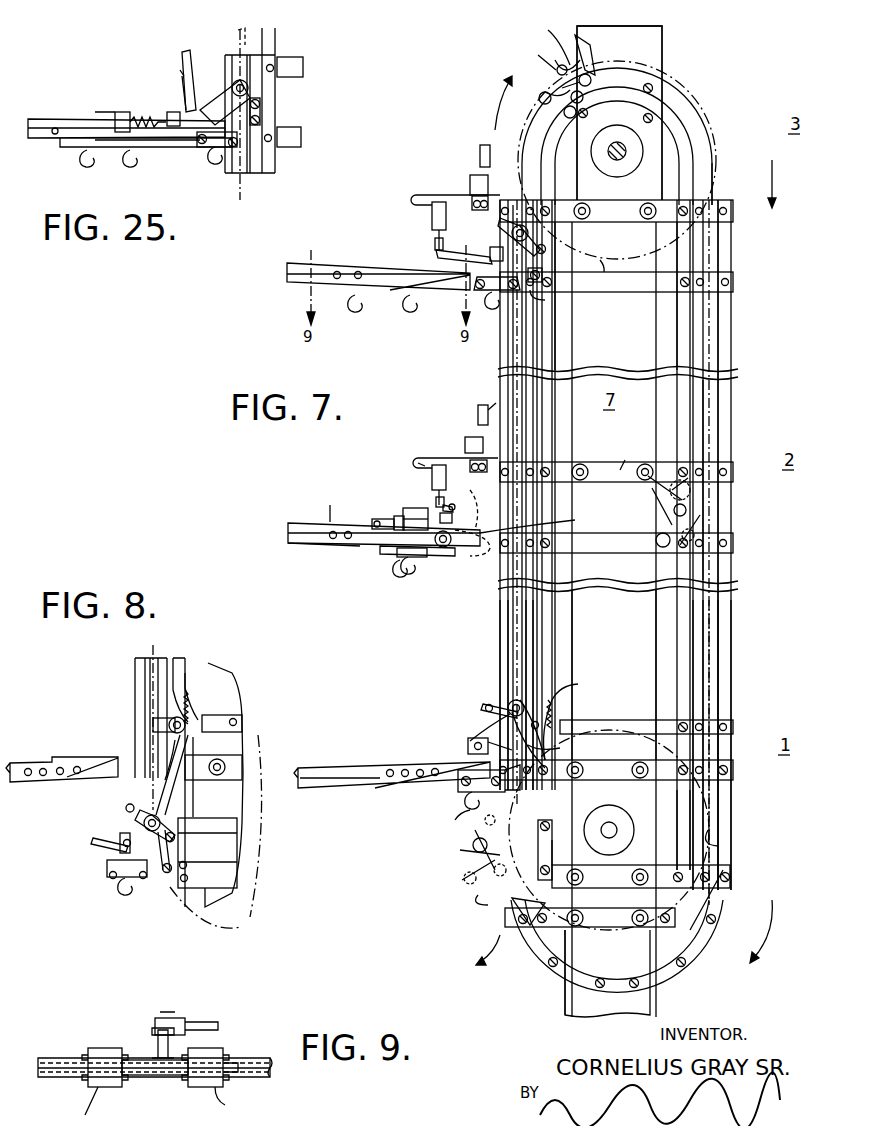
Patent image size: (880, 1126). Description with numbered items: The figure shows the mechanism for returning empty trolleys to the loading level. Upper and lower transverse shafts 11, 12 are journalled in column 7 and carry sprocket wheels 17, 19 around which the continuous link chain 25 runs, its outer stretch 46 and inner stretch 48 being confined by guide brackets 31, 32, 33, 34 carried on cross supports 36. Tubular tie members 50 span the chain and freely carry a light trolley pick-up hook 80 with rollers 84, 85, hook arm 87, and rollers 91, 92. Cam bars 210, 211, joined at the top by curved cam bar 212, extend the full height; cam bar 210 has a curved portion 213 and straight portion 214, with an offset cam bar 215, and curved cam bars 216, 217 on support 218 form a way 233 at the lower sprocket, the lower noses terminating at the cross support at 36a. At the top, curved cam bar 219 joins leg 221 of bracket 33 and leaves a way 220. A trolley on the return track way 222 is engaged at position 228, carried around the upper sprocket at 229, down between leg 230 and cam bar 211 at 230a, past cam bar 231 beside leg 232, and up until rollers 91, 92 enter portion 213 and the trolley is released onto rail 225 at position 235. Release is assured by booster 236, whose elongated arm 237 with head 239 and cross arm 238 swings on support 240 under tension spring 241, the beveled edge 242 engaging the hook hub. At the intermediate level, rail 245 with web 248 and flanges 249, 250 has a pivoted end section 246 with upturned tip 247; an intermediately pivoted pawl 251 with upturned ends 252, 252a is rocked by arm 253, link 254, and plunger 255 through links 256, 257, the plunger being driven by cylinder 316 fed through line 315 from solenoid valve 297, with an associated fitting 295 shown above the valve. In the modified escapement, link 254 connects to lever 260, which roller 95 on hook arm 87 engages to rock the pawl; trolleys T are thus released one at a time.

In FIG. 8, the column 7 is at (232, 688).
In FIG. 7, the upper transverse shaft 11 is at (620, 154).
In FIG. 7, the lower transverse shaft 12 is at (611, 828).
In FIG. 7, the upper sprocket wheel 17 is at (614, 263).
In FIG. 7, the lower sprocket wheel 19 is at (718, 846).
In FIG. 25, the continuous link chain 25 is at (242, 195).
In FIG. 7, the continuous link chain 25 is at (708, 640).
In FIG. 8, the continuous link chain 25 is at (155, 650).
In FIG. 7, the guide bracket 31 is at (528, 630).
In FIG. 7, the guide bracket 32 is at (530, 630).
In FIG. 7, the guide bracket 33 is at (695, 620).
In FIG. 7, the guide bracket 34 is at (722, 626).
In FIG. 7, the cross support 36 is at (618, 210).
In FIG. 7, the cross support location 36a is at (590, 885).
In FIG. 7, the outer chain stretch 46 is at (712, 418).
In FIG. 25, the inner chain stretch 48 is at (240, 196).
In FIG. 7, the inner chain stretch 48 is at (500, 612).
In FIG. 8, the inner chain stretch 48 is at (152, 652).
In FIG. 25, the tubular tie member 50 is at (248, 88).
In FIG. 7, the tubular tie member 50 is at (530, 234).
In FIG. 8, the tubular tie member 50 is at (160, 820).
In FIG. 25, the light trolley pick-up hook 80 is at (260, 116).
In FIG. 7, the light trolley pick-up hook 80 is at (545, 270).
In FIG. 8, the light trolley pick-up hook 80 is at (96, 846).
In FIG. 7, the roller 84 is at (554, 247).
In FIG. 7, the roller 85 is at (490, 192).
In FIG. 25, the hook arm 87 is at (215, 128).
In FIG. 7, the hook arm 87 is at (486, 292).
In FIG. 7, the roller 91 is at (545, 300).
In FIG. 7, the roller 92 is at (545, 283).
In FIG. 25, the roller 95 is at (198, 100).
In FIG. 7, the cam bar 210 is at (550, 350).
In FIG. 8, the cam bar 210 is at (190, 660).
In FIG. 7, the cam bar 211 is at (680, 340).
In FIG. 7, the curved cam bar 212 is at (608, 110).
In FIG. 7, the curved portion 213 is at (555, 700).
In FIG. 7, the straight portion 214 is at (548, 820).
In FIG. 7, the cam bar 215 is at (552, 852).
In FIG. 7, the inner curved cam bar 216 is at (604, 962).
In FIG. 7, the outer curved cam bar 217 is at (598, 992).
In FIG. 7, the support 218 is at (518, 924).
In FIG. 7, the curved cam bar 219 is at (640, 82).
In FIG. 7, the curved way 220 is at (670, 112).
In FIG. 7, the leg 221 is at (714, 175).
In FIG. 7, the return track way 222 is at (295, 262).
In FIG. 9, the return track way 222 is at (66, 1056).
In FIG. 7, the rail 225 is at (322, 756).
In FIG. 8, the rail 225 is at (36, 750).
In FIG. 7, the trolley position 228 is at (480, 250).
In FIG. 7, the trolley position 229 is at (553, 45).
In FIG. 7, the vertical leg 230 is at (712, 252).
In FIG. 7, the broken-line position 230a is at (692, 500).
In FIG. 7, the cam bar 231 is at (700, 800).
In FIG. 7, the vertical leg 232 is at (716, 705).
In FIG. 7, the way 233 is at (672, 942).
In FIG. 7, the release position 235 is at (470, 740).
In FIG. 7, the booster 236 is at (488, 726).
In FIG. 8, the booster 236 is at (172, 718).
In FIG. 8, the elongated arm 237 is at (170, 745).
In FIG. 8, the cross arm 238 is at (235, 738).
In FIG. 7, the head 239 is at (490, 735).
In FIG. 8, the head 239 is at (165, 782).
In FIG. 7, the support 240 is at (588, 724).
In FIG. 8, the support 240 is at (226, 712).
In FIG. 7, the tension spring 241 is at (556, 708).
In FIG. 8, the tension spring 241 is at (192, 700).
In FIG. 8, the beveled edge 242 is at (153, 724).
In FIG. 7, the rail 245 is at (300, 522).
In FIG. 9, the rail 245 is at (144, 1059).
In FIG. 7, the pivoted end rail section 246 is at (470, 556).
In FIG. 7, the upturned tip 247 is at (606, 497).
In FIG. 7, the web 248 is at (375, 549).
In FIG. 7, the upper flange 249 is at (315, 502).
In FIG. 7, the lower flange 250 is at (300, 544).
In FIG. 7, the pawl 251 is at (395, 558).
In FIG. 9, the pawl 251 is at (180, 1068).
In FIG. 7, the upturned end 252 is at (374, 519).
In FIG. 9, the upturned end 252 is at (124, 1062).
In FIG. 7, the upturned end 252a is at (445, 550).
In FIG. 9, the upturned end 252a is at (222, 1066).
In FIG. 7, the arm 253 is at (396, 516).
In FIG. 9, the arm 253 is at (152, 1026).
In FIG. 7, the link 254 is at (410, 508).
In FIG. 9, the link 254 is at (212, 1018).
In FIG. 7, the plunger 255 is at (432, 488).
In FIG. 7, the link 256 is at (462, 495).
In FIG. 7, the link 257 is at (455, 520).
In FIG. 25, the lever 260 is at (181, 76).
In FIG. 7, the valve 295 is at (478, 410).
In FIG. 7, the solenoid valve 297 is at (466, 447).
In FIG. 7, the air line 315 is at (425, 457).
In FIG. 7, the cylinder 316 is at (418, 466).
In FIG. 25, the tray hook T is at (213, 150).
In FIG. 7, the tray hook T is at (498, 300).
In FIG. 8, the tray hook T is at (118, 880).
In FIG. 9, the tray hook T is at (157, 1106).